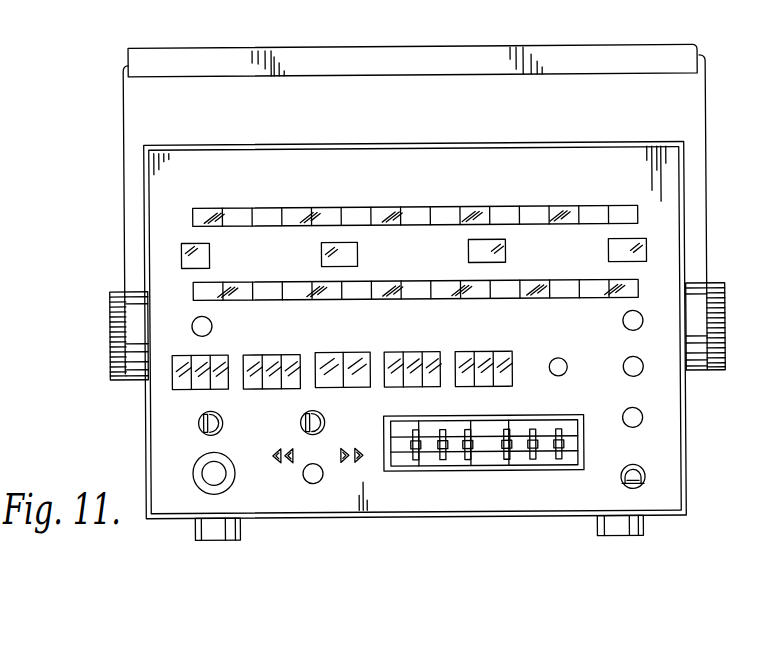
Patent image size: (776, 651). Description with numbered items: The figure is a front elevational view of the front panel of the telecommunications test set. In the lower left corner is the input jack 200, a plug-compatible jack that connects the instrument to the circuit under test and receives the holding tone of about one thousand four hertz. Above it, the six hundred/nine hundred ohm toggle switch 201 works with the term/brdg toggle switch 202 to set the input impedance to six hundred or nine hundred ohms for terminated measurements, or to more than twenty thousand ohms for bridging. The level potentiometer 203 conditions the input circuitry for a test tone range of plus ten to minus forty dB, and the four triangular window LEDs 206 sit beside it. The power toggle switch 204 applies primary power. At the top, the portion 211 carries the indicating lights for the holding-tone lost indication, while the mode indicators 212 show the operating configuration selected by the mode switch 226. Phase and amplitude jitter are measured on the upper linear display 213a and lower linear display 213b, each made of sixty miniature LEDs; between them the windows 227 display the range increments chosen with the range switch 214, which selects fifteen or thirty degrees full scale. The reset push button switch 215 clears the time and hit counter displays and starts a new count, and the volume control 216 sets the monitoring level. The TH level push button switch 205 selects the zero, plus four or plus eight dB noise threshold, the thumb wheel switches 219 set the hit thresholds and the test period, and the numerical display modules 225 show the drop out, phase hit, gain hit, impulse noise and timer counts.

The input jack 200 is at (208, 470).
The 600/900 ohm toggle switch 201 is at (210, 413).
The term/brdg toggle switch 202 is at (313, 412).
The level potentiometer 203 is at (320, 480).
The power toggle switch 204 is at (637, 479).
The TH level push button switch 205 is at (567, 368).
The triangular window LEDs 206 is at (288, 470).
The 1004 Hz lost indicating lights 211 is at (181, 198).
The mode indicators 212 is at (566, 162).
The upper linear display 213a is at (591, 201).
The lower linear display 213b is at (647, 288).
The range switch 214 is at (636, 324).
The reset push button switch 215 is at (633, 370).
The volume control 216 is at (642, 418).
The thumb wheel switches 219 is at (562, 494).
The numerical display modules 225 is at (265, 391).
The mode switch 226 is at (181, 320).
The range windows 227 is at (318, 249).